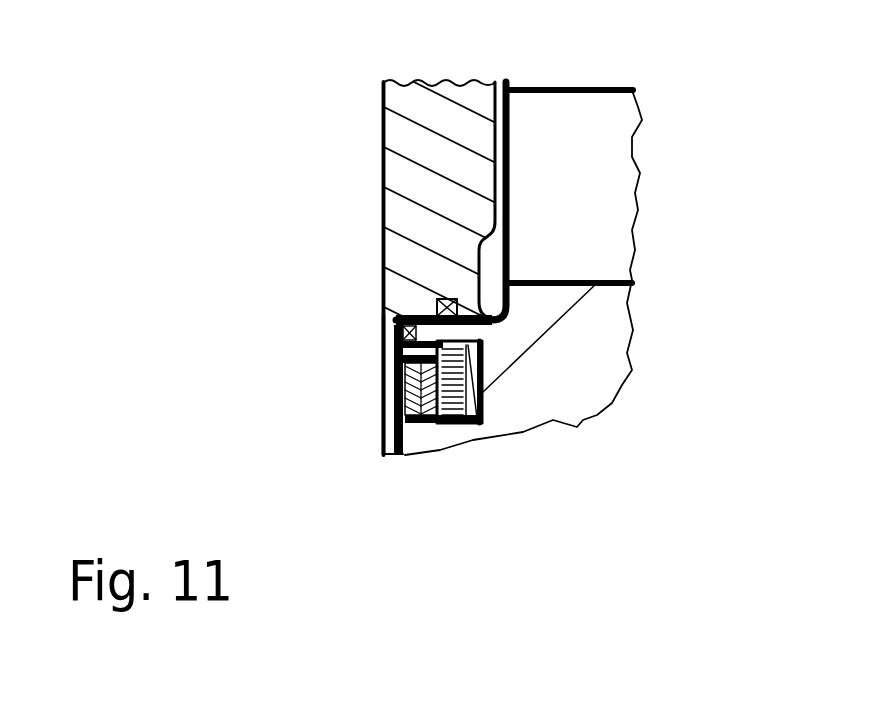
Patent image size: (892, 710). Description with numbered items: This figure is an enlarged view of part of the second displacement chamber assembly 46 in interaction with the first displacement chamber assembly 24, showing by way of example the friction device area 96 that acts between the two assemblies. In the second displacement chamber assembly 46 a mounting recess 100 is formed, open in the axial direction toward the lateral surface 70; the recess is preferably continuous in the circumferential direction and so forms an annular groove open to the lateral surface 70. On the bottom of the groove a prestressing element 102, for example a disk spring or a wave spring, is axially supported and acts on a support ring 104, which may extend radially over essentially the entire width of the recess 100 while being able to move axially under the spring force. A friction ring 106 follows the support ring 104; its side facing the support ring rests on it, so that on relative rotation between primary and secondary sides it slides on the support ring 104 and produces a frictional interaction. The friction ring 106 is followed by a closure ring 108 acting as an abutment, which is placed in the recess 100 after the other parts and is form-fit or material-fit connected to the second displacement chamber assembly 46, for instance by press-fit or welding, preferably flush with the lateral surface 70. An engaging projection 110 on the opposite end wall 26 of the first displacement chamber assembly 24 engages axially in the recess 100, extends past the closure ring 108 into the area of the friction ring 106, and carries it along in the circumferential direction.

The first displacement chamber assembly 24 is at (356, 185).
The end wall 26 is at (382, 92).
The second displacement chamber assembly 46 is at (655, 343).
The lateral surface 70 is at (398, 453).
The friction device area 96 is at (362, 421).
The mounting recess 100 is at (483, 397).
The prestressing element 102 is at (483, 367).
The support ring 104 is at (457, 423).
The friction ring 106 is at (433, 423).
The closure ring 108 is at (400, 374).
The engaging projection 110 is at (395, 316).